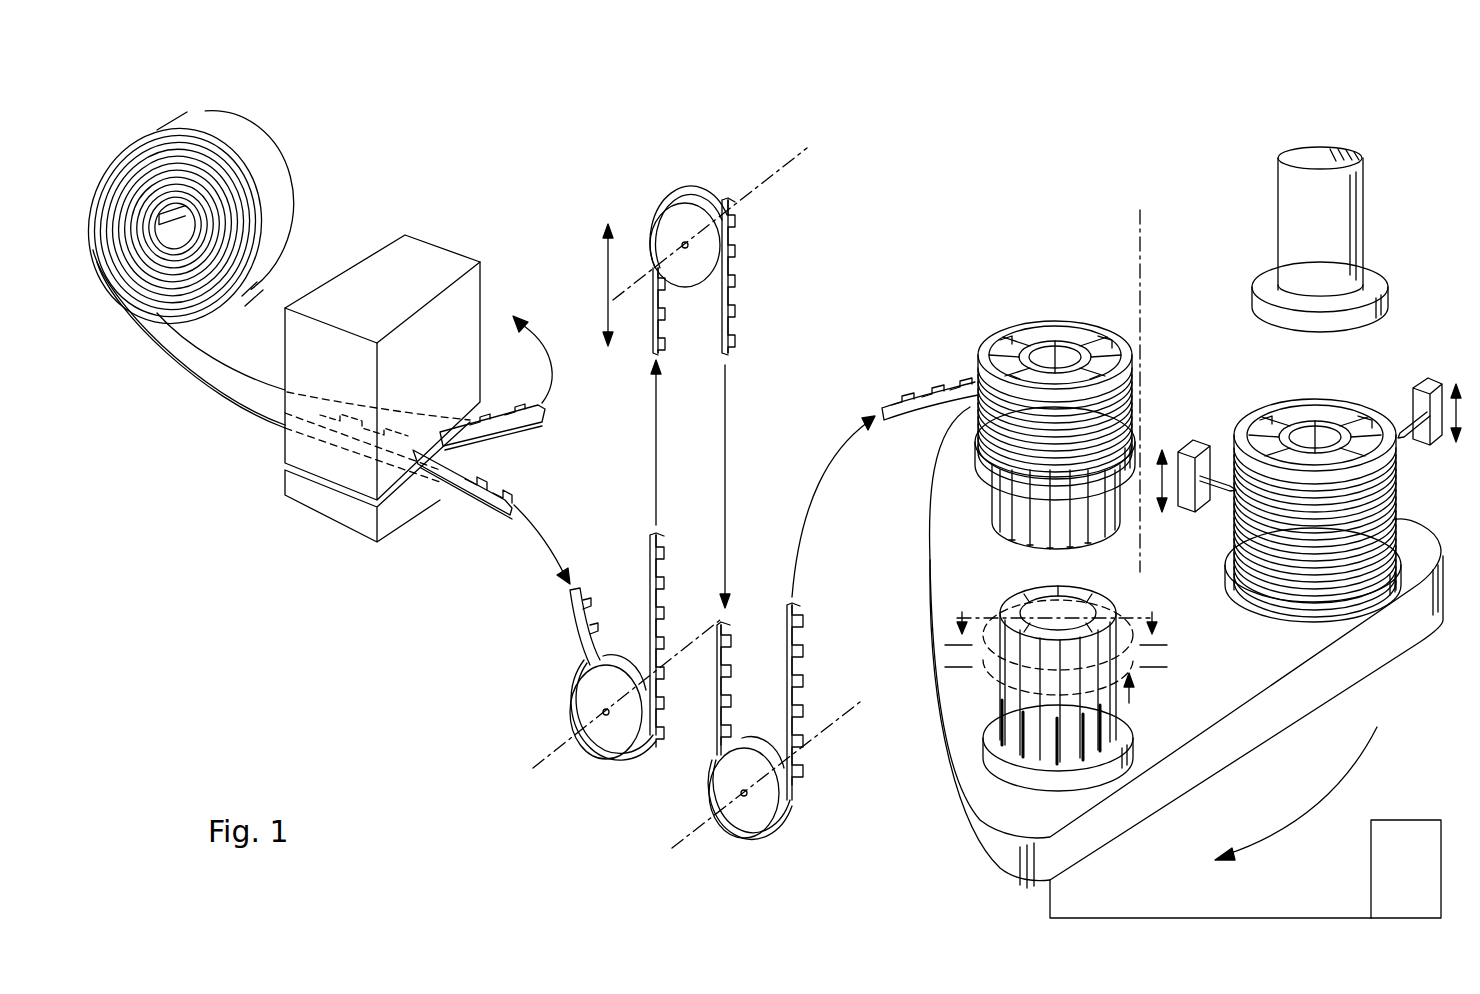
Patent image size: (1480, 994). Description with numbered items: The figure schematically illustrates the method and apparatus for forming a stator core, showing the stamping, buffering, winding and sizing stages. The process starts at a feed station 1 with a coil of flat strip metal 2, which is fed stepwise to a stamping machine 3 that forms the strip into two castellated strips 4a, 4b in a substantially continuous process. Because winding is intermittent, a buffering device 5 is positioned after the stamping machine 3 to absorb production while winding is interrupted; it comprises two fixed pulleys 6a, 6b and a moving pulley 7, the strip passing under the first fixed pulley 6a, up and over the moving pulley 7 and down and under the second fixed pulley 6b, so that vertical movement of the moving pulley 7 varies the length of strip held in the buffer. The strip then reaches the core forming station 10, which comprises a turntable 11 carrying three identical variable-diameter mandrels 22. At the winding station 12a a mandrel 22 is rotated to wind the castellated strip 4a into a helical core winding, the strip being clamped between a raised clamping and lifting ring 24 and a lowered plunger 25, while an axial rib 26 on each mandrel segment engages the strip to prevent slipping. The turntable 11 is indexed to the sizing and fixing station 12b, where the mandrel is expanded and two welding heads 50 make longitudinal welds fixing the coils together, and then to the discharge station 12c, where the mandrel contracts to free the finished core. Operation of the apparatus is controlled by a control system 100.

The feed station 1 is at (234, 102).
The coil of flat strip metal 2 is at (170, 355).
The stamping machine 3 is at (427, 256).
The castellated strip 4a is at (470, 492).
The castellated strip 4b is at (502, 414).
The buffering device 5 is at (808, 110).
The first fixed pulley 6a is at (605, 750).
The second fixed pulley 6b is at (745, 838).
The moving pulley 7 is at (690, 290).
The core forming station 10 is at (1378, 110).
The turntable 11 is at (1365, 660).
The winding station 12a is at (1137, 436).
The sizing and fixing station 12b is at (1351, 379).
The discharge station 12c is at (1063, 729).
The mandrel 22 is at (1046, 368).
The clamping and lifting ring 24 is at (980, 455).
The plunger 25 is at (1350, 240).
The axial rib 26 is at (1095, 740).
The welding heads 50 is at (1196, 440).
The control system 100 is at (1371, 892).